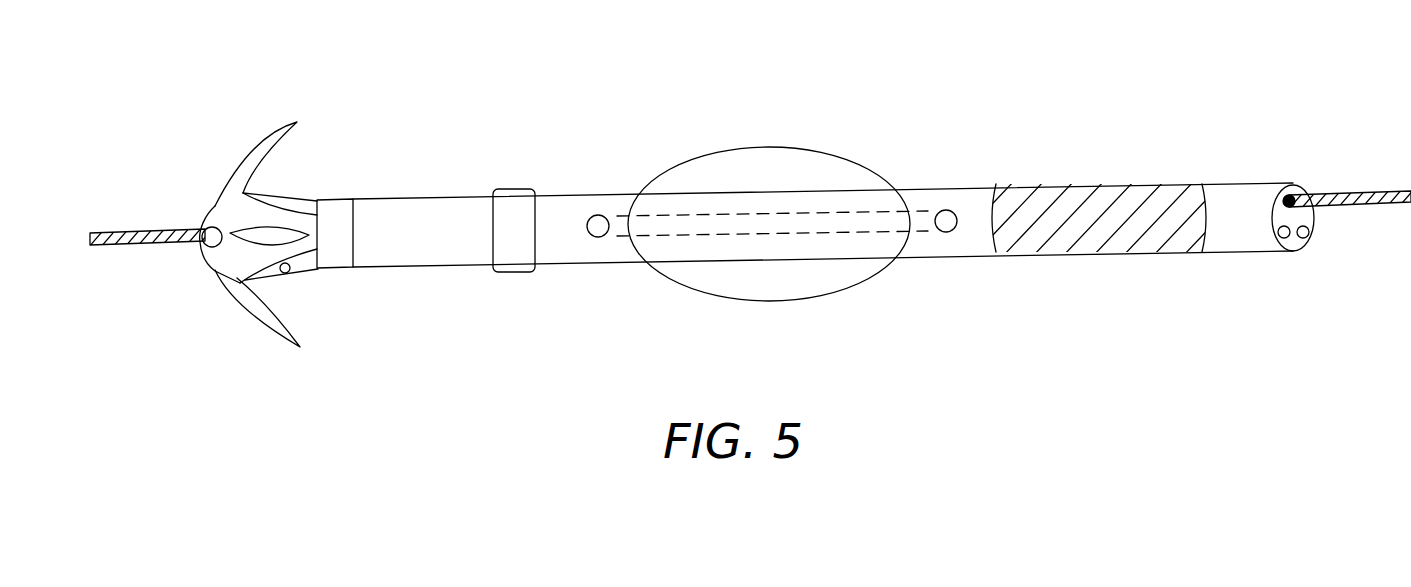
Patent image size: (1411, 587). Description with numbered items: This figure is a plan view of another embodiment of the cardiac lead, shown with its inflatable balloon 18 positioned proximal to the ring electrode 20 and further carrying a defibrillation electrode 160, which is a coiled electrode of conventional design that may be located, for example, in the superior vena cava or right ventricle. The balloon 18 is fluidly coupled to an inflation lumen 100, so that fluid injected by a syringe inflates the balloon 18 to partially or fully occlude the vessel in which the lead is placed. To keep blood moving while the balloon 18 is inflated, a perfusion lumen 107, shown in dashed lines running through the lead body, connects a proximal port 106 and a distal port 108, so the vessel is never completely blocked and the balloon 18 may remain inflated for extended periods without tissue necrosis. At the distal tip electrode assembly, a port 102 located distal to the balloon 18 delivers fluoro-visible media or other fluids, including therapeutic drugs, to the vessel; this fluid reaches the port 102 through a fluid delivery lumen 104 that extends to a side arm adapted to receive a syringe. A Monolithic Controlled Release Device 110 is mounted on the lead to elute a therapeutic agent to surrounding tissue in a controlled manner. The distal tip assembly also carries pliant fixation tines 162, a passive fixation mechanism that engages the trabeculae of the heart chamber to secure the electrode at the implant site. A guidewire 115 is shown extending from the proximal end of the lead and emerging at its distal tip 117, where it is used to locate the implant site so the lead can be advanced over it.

The balloon 18 is at (705, 154).
The ring electrode 20 is at (503, 188).
The inflation lumen 100 is at (1308, 237).
The port 102 is at (288, 274).
The fluid delivery lumen 104 is at (1283, 240).
The proximal port 106 is at (947, 214).
The perfusion lumen 107 is at (780, 236).
The distal port 108 is at (603, 234).
The Monolithic Controlled Release Device 110 is at (340, 198).
The guidewire 115 is at (1330, 195).
The guide wire tip 117 is at (112, 233).
The defibrillation electrode 160 is at (1040, 245).
The fixation tines 162 is at (283, 233).